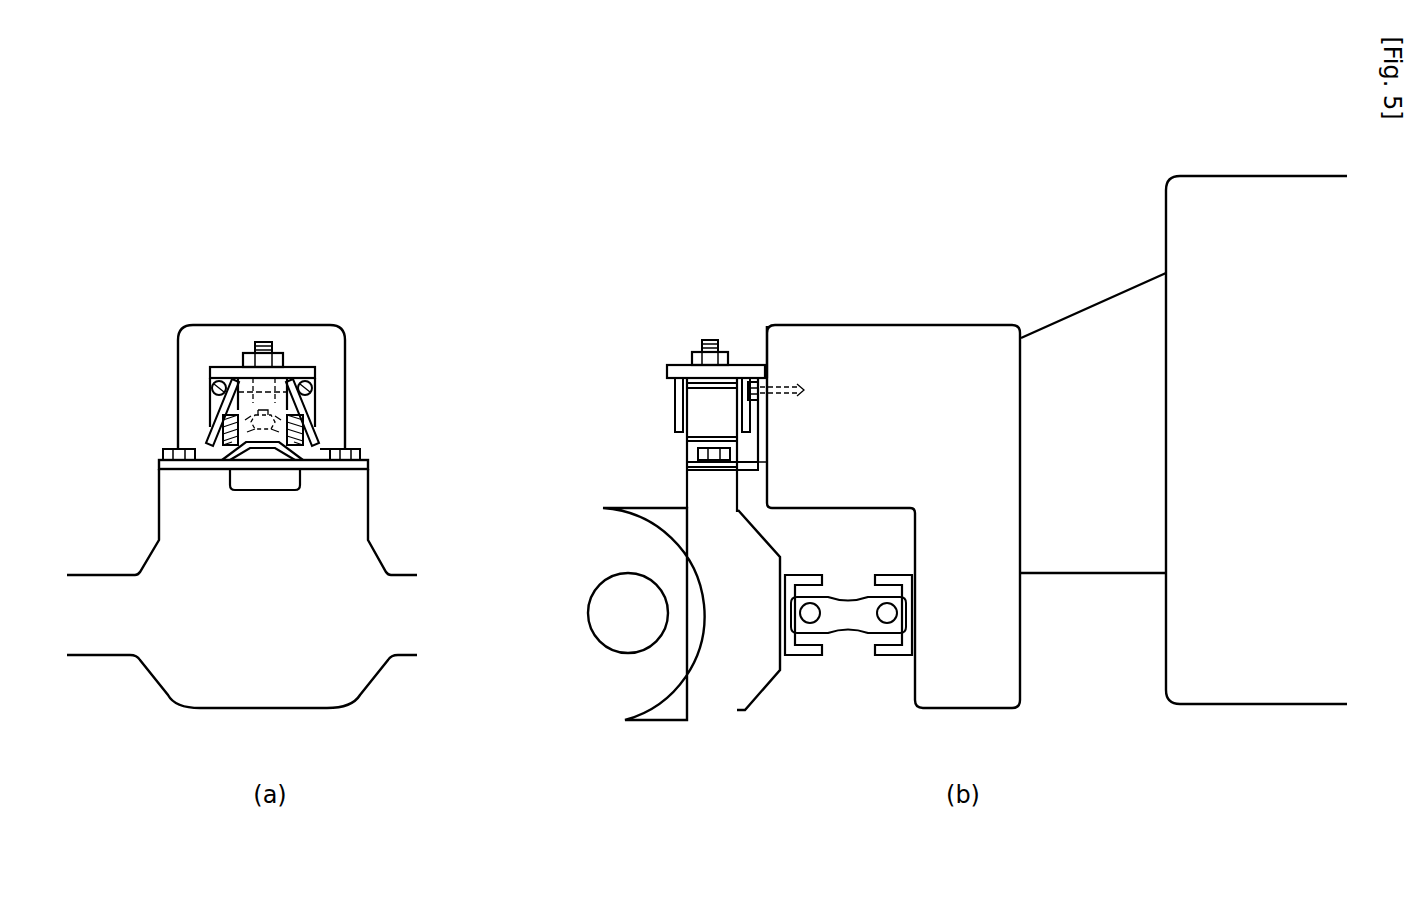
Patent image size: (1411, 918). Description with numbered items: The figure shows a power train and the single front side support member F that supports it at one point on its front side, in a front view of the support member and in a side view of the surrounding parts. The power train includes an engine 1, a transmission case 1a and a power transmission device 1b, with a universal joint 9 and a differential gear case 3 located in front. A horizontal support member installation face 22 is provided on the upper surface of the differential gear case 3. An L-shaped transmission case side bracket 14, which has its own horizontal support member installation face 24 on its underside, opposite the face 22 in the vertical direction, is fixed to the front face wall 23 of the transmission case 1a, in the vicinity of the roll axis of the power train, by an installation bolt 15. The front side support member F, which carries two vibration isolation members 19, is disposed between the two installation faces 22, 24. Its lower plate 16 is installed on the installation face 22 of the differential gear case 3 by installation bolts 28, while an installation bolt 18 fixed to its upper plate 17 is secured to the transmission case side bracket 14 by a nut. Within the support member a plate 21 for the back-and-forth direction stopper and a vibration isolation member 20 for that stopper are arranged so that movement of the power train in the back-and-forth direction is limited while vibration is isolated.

The front side support member F is at (451, 417).
The engine 1 is at (1185, 205).
The transmission case 1a is at (999, 659).
The power transmission device 1b is at (1070, 331).
The differential gear case 3 is at (355, 663).
The universal joint 9 is at (851, 622).
The transmission case side bracket 14 is at (232, 365).
The installation bolt 15 is at (212, 387).
The lower plate 16 is at (327, 471).
The upper plate 17 is at (210, 430).
The installation bolt 18 is at (263, 341).
The vibration isolation member 19 is at (225, 450).
The vibration isolation member for back-and-forth direction stopper 20 is at (263, 405).
The plate for back-and-forth direction stopper 21 is at (265, 403).
The support member installation face 22 is at (327, 455).
The front face wall 23 is at (322, 347).
The support member installation face 24 is at (212, 398).
The installation bolt 28 is at (178, 464).